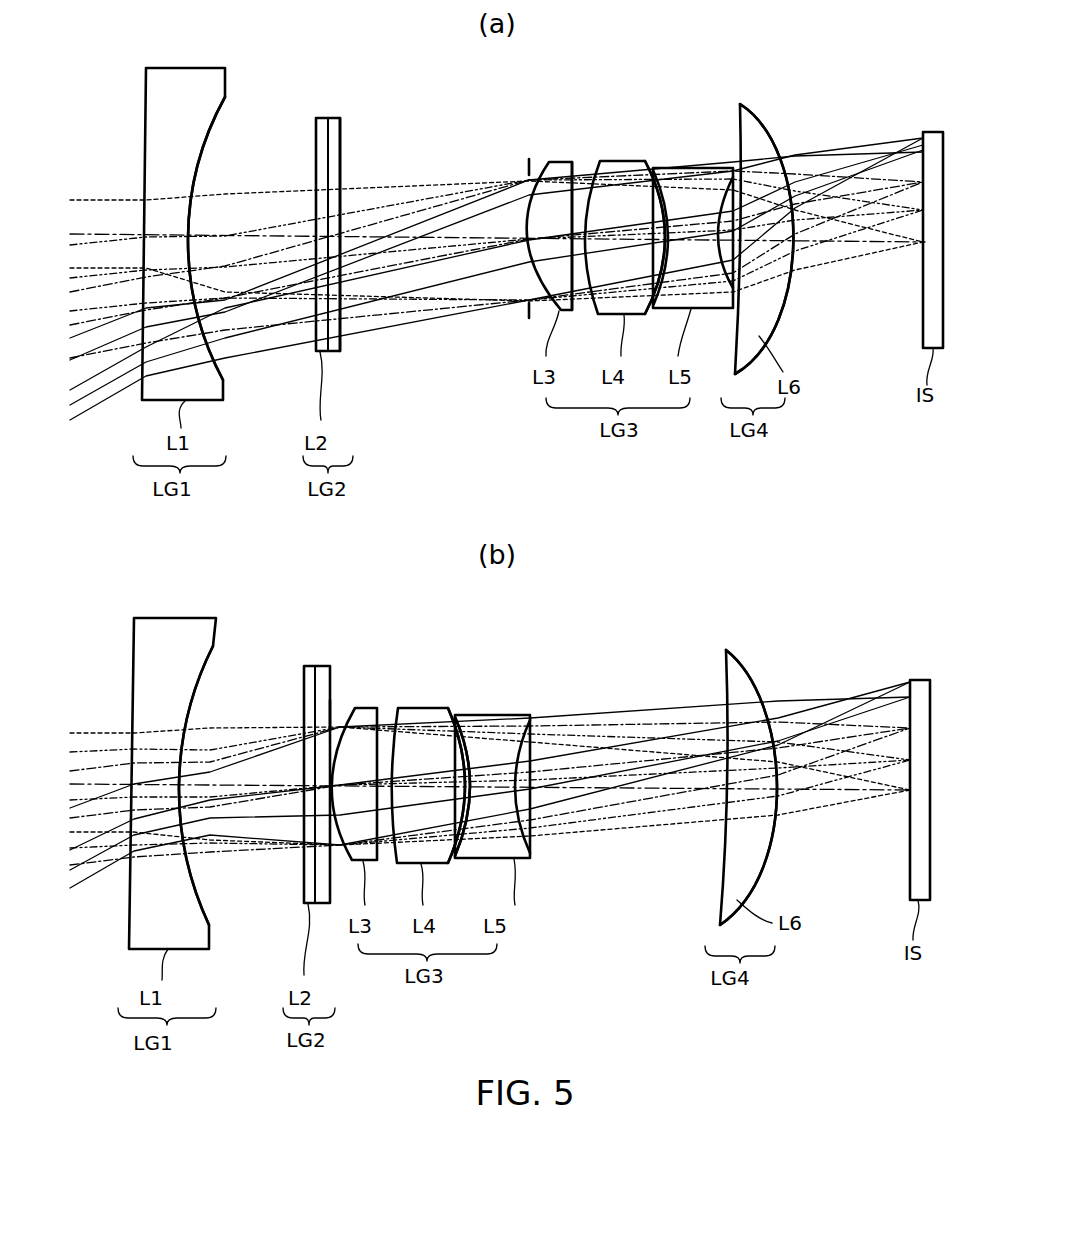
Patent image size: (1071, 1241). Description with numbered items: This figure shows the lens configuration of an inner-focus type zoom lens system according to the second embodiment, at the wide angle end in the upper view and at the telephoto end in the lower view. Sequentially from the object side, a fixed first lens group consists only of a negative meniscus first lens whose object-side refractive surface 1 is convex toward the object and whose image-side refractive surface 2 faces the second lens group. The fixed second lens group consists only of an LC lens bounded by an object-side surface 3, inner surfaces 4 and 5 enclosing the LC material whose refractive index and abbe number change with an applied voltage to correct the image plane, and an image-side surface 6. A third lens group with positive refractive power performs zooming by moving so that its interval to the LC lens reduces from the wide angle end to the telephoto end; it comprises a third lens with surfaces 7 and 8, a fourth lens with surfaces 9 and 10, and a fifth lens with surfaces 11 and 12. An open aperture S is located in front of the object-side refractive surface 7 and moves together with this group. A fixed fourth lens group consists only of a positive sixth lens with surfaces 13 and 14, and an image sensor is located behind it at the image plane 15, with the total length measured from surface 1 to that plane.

The object-side refractive surface of the first lens 1 is at (145, 95).
The image-side refractive surface of the first lens 2 is at (224, 116).
The object-side surface of the LC lens 3 is at (316, 133).
The inner surface of the LC lens 4 is at (331, 120).
The inner curved surface of the LC lens 5 is at (328, 161).
The image-side surface of the LC lens 6 is at (341, 168).
The object-side refractive surface of the third lens 7 is at (549, 162).
The image-side refractive surface of the third lens 8 is at (575, 170).
The object-side refractive surface of the fourth lens 9 is at (598, 166).
The image-side refractive surface of the fourth lens 10 is at (658, 196).
The object-side refractive surface of the fifth lens 11 is at (664, 212).
The image-side refractive surface of the fifth lens 12 is at (721, 222).
The object-side refractive surface of the sixth lens 13 is at (739, 120).
The image-side refractive surface of the sixth lens 14 is at (771, 126).
The image plane 15 is at (922, 155).
The open aperture S is at (526, 166).